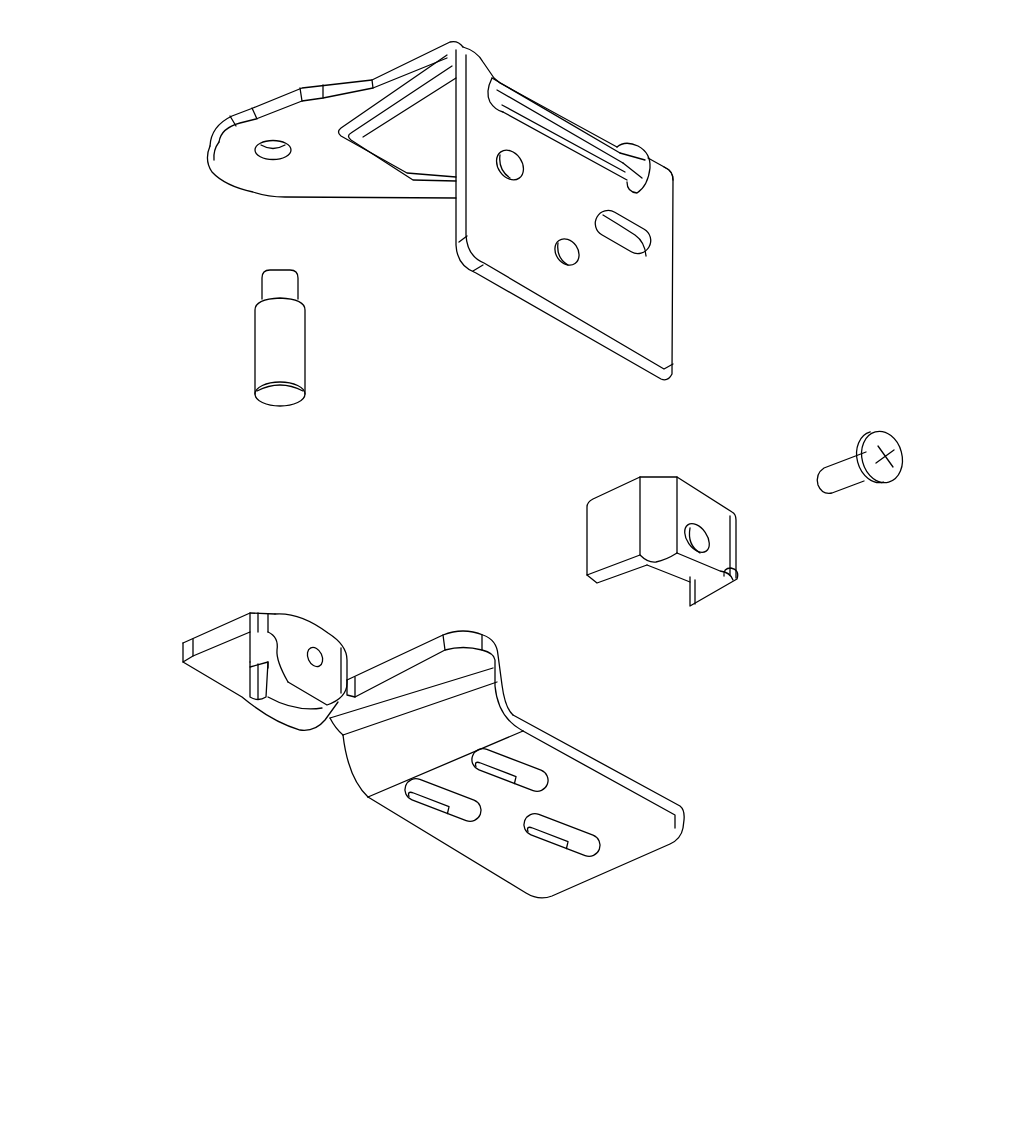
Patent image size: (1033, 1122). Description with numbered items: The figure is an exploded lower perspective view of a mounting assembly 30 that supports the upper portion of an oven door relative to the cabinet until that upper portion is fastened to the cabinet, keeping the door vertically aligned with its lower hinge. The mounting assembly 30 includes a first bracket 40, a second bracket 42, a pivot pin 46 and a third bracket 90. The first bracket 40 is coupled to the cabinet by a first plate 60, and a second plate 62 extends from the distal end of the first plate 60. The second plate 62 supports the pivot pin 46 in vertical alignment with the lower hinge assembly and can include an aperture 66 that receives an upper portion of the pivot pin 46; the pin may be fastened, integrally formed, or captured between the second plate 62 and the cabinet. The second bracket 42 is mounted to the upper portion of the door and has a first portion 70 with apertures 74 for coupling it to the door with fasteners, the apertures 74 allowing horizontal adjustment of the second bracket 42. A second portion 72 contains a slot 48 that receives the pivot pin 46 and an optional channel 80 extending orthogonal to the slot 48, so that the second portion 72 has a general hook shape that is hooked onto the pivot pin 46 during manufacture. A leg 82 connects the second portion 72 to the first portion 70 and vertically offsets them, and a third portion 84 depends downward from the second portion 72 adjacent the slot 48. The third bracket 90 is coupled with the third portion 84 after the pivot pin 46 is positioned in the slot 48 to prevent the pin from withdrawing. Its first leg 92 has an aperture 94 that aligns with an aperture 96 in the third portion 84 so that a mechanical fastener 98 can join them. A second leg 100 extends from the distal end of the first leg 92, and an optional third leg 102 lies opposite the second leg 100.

The mounting assembly 30 is at (132, 95).
The first bracket 40 is at (694, 172).
The second bracket 42 is at (693, 864).
The pivot pin 46 is at (268, 337).
The slot 48 is at (389, 650).
The first plate 60 is at (650, 288).
The second plate 62 is at (317, 95).
The aperture 66 is at (263, 153).
The first portion 70 is at (630, 830).
The second portion 72 is at (217, 665).
The apertures 74 is at (527, 787).
The channel 80 is at (253, 693).
The leg 82 is at (383, 707).
The third portion 84 is at (305, 690).
The third bracket 90 is at (574, 539).
The first leg 92 is at (690, 503).
The aperture 94 is at (707, 542).
The aperture 96 is at (313, 652).
The mechanical fastener 98 is at (902, 470).
The second leg 100 is at (700, 593).
The third leg 102 is at (617, 548).